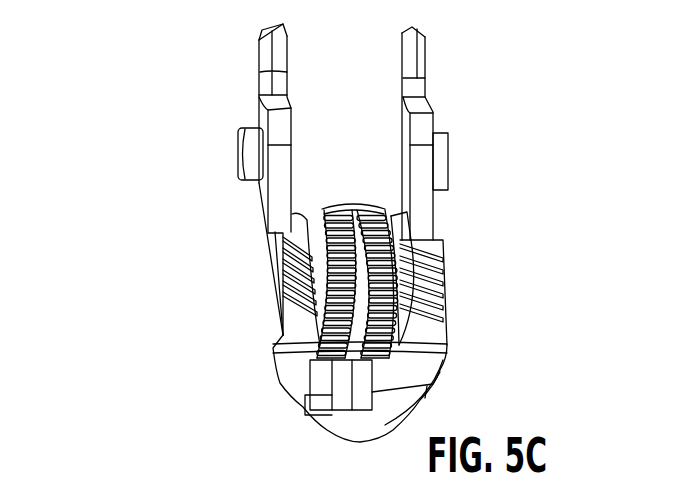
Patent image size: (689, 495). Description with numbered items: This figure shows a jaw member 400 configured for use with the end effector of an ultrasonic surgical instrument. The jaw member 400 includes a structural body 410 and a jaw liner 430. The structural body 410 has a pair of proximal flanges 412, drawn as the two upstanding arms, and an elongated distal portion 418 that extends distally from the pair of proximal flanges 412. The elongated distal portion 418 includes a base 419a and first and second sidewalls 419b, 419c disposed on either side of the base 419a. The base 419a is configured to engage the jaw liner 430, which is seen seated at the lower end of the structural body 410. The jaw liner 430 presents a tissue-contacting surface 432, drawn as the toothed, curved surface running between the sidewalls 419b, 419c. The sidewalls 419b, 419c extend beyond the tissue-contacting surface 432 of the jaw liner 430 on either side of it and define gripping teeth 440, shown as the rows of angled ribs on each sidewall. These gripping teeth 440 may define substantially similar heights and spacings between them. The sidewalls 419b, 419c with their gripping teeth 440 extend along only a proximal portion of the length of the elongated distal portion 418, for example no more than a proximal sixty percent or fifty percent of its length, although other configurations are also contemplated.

The jaw member 400 is at (118, 113).
The structural body 410 is at (425, 222).
The proximal flanges 412 is at (262, 50).
The elongated distal portion 418 is at (438, 342).
The base 419a is at (315, 413).
The first sidewall 419b is at (437, 310).
The second sidewall 419c is at (290, 318).
The jaw liner 430 is at (342, 400).
The tissue-contacting surface 432 is at (352, 214).
The gripping teeth 440 is at (289, 258).